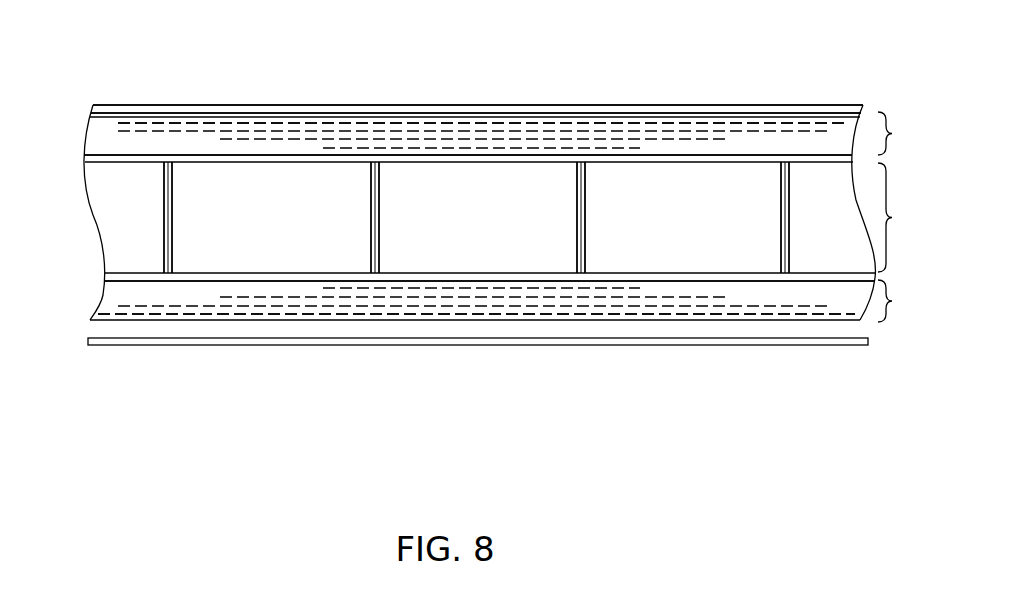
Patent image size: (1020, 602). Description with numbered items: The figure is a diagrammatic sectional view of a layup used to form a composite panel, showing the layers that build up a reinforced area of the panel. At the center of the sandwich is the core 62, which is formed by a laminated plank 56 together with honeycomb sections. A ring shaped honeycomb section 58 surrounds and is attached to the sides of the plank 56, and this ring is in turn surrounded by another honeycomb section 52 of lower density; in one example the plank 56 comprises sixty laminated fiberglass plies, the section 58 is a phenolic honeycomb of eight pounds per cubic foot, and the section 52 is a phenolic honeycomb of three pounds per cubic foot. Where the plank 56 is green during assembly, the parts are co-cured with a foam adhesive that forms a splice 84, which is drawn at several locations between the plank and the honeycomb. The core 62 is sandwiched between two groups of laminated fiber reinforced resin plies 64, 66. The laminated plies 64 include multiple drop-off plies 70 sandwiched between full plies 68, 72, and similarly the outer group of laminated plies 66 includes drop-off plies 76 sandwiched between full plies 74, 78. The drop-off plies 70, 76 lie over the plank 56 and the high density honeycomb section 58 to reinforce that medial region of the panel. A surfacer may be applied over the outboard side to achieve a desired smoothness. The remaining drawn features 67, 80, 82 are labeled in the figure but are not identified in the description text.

The honeycomb core section 52 is at (838, 190).
The plank 56 is at (557, 252).
The ring shaped honeycomb section 58 is at (205, 243).
The core 62 is at (514, 218).
The laminated plies 64 is at (514, 301).
The laminated plies 66 is at (383, 322).
The base bar 67 is at (467, 345).
The full ply 68 is at (122, 313).
The drop-off plies 70 is at (327, 289).
The full ply 72 is at (797, 282).
The full ply 74 is at (213, 155).
The drop-off plies 76 is at (517, 148).
The full ply 78 is at (662, 123).
The flange inner sheet 80 is at (477, 114).
The outer sheet 82 is at (268, 105).
The splice 84 is at (158, 197).